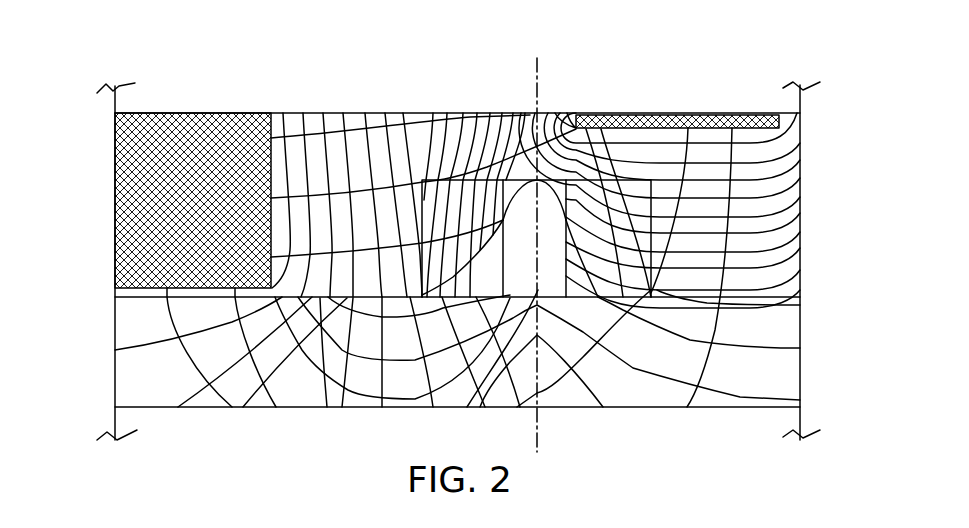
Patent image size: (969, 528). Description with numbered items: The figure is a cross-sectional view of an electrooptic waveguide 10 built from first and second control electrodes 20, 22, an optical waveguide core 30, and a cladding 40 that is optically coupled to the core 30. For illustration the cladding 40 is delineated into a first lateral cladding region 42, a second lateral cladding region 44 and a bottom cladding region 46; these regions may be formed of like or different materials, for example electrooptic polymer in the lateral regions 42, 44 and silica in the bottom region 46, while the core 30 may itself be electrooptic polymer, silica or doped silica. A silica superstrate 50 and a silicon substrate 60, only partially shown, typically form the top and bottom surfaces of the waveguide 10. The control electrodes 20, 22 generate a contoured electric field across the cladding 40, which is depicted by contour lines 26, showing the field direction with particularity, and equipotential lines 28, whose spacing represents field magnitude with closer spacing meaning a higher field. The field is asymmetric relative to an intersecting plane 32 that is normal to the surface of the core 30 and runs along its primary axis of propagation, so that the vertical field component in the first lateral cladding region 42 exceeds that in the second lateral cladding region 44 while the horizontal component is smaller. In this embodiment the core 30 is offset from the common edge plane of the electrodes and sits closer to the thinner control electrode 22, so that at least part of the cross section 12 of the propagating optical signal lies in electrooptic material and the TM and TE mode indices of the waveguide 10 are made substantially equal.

The electrooptic waveguide 10 is at (74, 128).
The cross section of an optical signal 12 is at (517, 196).
The first control electrode 20 is at (113, 206).
The second control electrode 22 is at (783, 122).
The contour lines 26 is at (357, 125).
The equipotential lines 28 is at (123, 350).
The optical waveguide core 30 is at (543, 289).
The intersecting plane 32 is at (536, 68).
The cladding 40 is at (797, 221).
The first lateral cladding region 42 is at (452, 183).
The second lateral cladding region 44 is at (610, 114).
The bottom cladding region 46 is at (642, 393).
The silica superstrate 50 is at (803, 104).
The silicon substrate 60 is at (803, 412).